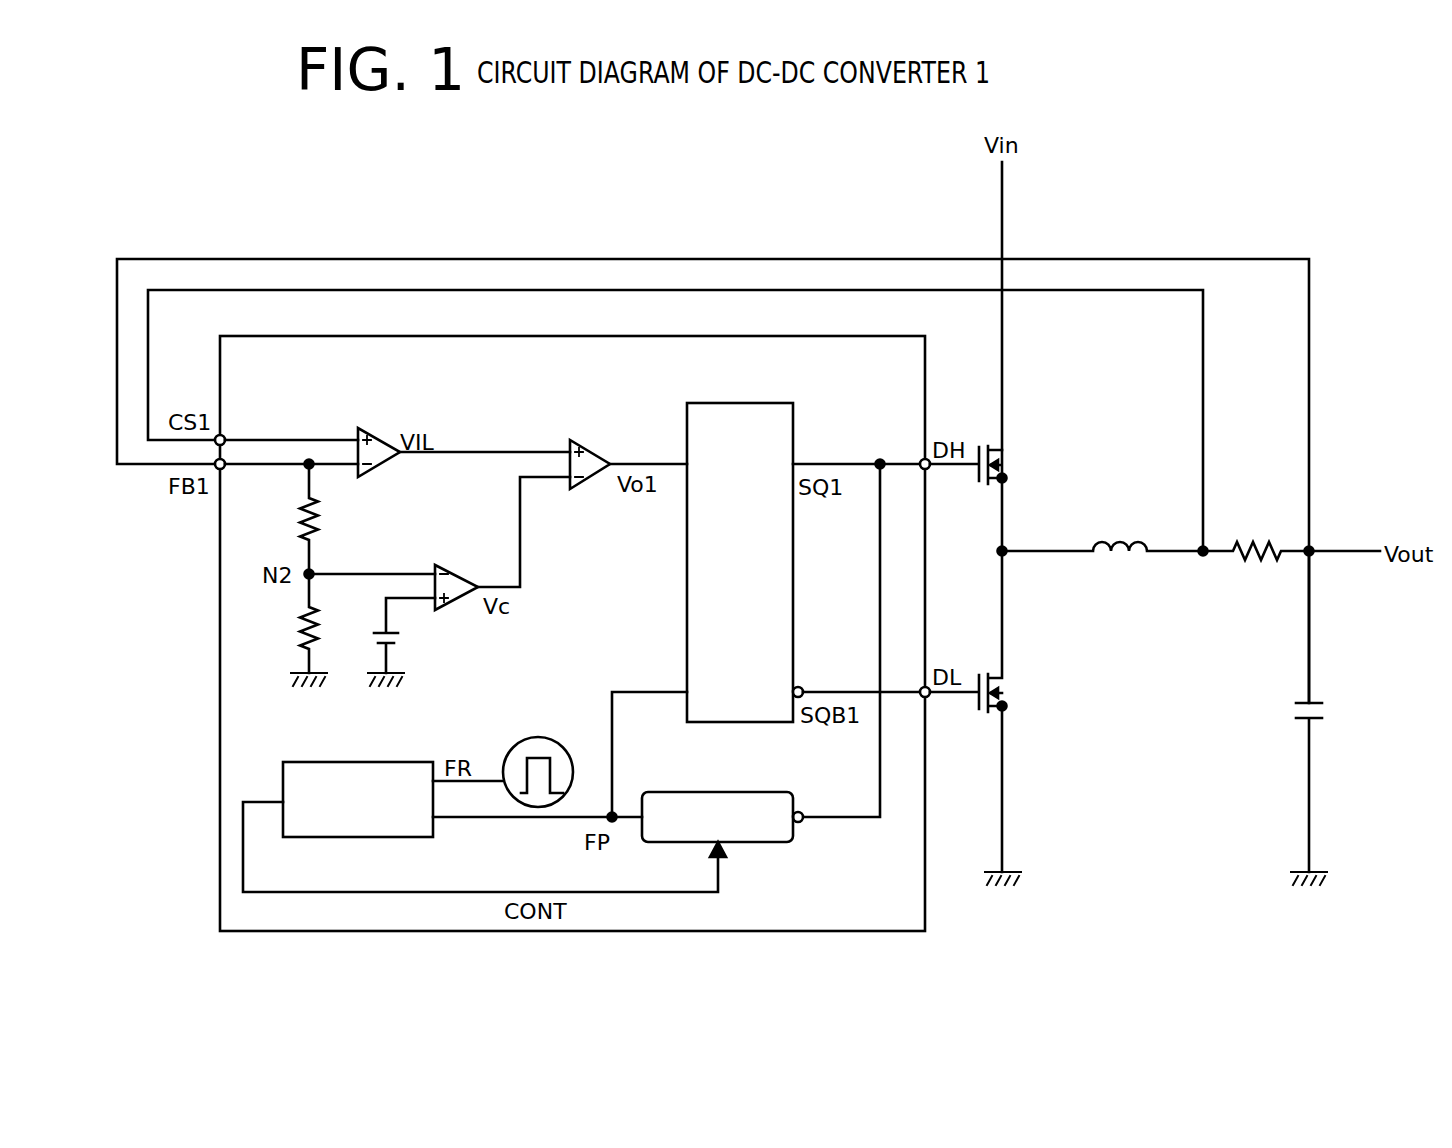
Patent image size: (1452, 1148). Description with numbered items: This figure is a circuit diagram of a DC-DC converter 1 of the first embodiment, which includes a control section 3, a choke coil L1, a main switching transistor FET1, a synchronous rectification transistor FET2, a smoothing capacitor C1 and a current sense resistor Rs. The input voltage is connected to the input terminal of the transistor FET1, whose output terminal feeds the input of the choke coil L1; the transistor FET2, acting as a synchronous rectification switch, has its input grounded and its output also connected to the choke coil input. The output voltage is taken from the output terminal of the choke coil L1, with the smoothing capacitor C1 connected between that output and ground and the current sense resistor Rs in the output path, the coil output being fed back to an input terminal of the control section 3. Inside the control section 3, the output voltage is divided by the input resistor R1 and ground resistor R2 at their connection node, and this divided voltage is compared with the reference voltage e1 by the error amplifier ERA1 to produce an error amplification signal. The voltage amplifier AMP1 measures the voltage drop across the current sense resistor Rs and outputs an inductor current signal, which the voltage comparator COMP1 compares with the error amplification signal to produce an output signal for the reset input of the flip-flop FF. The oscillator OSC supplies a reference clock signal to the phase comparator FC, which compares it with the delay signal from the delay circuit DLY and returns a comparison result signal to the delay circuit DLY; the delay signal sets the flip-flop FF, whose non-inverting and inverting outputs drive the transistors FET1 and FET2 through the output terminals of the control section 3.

The DC-DC converter 1 is at (770, 158).
The control section 3 is at (220, 701).
The voltage amplifier AMP1 is at (357, 436).
The voltage comparator COMP1 is at (568, 448).
The error amplifier ERA1 is at (438, 570).
The flip-flop FF is at (738, 403).
The main switching transistor FET1 is at (998, 498).
The synchronous rectification transistor FET2 is at (998, 711).
The choke coil L1 is at (1102, 530).
The current sense resistor Rs is at (1291, 535).
The smoothing capacitor C1 is at (1292, 711).
The input resistor R1 is at (288, 519).
The ground resistor R2 is at (288, 623).
The reference voltage e1 is at (404, 635).
The phase comparator FC is at (330, 762).
The oscillator OSC is at (538, 756).
The delay circuit DLY is at (780, 842).